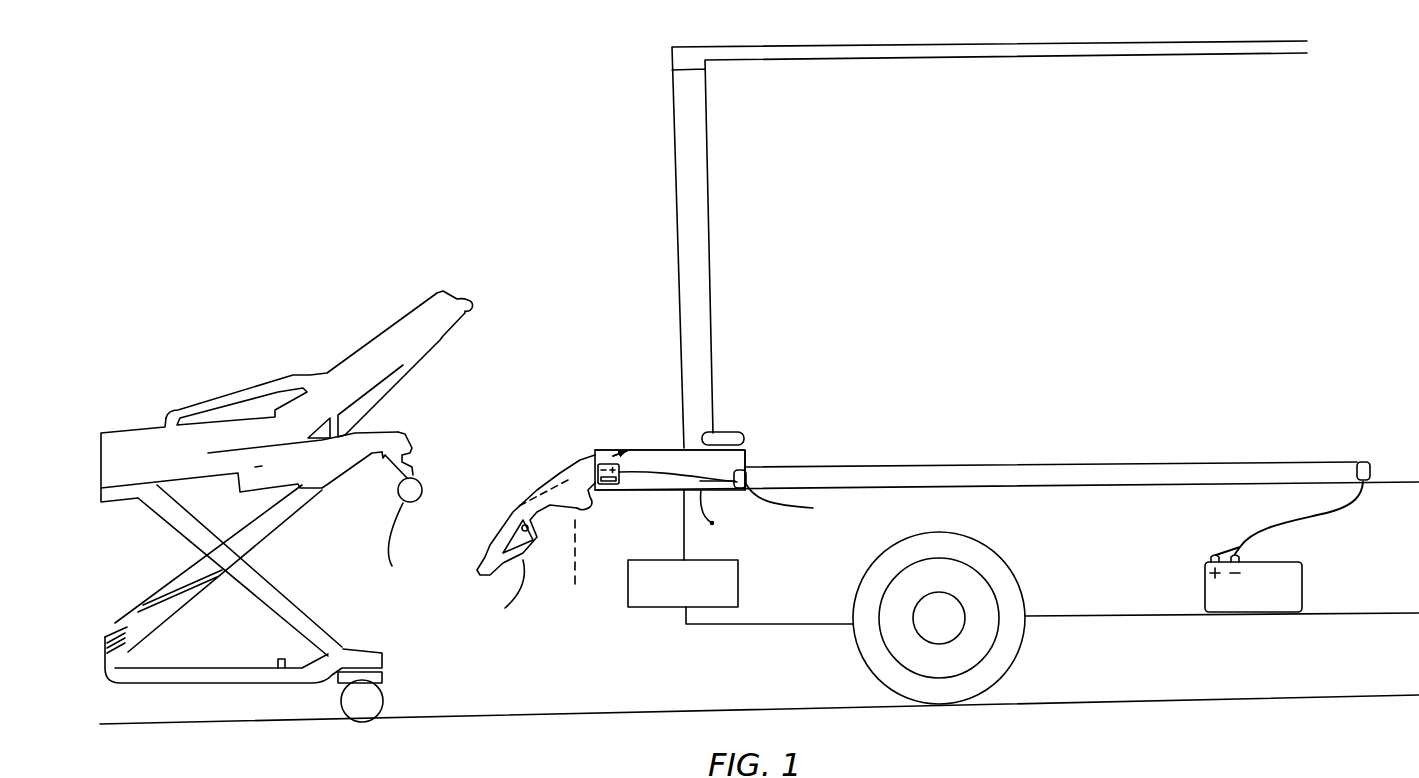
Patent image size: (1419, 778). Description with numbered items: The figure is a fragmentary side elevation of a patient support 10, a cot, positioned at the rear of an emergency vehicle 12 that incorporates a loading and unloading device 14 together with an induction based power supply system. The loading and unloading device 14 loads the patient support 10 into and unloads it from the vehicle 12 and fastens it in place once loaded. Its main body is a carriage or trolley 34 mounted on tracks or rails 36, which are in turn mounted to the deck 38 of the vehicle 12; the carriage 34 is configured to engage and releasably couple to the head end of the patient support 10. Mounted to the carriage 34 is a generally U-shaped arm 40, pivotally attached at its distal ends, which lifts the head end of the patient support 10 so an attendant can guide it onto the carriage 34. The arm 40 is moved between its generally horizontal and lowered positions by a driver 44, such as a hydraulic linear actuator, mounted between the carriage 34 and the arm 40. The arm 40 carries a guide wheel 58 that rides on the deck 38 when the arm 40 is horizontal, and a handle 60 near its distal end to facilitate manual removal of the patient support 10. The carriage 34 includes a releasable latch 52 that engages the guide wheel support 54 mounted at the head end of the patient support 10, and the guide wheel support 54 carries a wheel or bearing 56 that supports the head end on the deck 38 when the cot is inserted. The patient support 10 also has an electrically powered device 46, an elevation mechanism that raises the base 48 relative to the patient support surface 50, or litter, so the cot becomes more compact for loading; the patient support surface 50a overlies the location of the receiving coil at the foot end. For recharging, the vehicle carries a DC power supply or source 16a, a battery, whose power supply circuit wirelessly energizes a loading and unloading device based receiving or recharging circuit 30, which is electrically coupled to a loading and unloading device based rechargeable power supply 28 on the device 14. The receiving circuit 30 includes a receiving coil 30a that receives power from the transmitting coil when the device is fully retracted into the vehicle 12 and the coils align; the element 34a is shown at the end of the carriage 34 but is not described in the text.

The patient support 10 is at (432, 250).
The emergency vehicle 12 is at (658, 93).
The loading and unloading device 14 is at (649, 440).
The DC power supply or source 16a is at (1190, 580).
The loading and unloading device based rechargeable power supply 28 is at (608, 461).
The loading and unloading device based receiving or recharging circuit 30 is at (729, 520).
The receiving coil 30a is at (808, 504).
The carriage or trolley 34 is at (672, 467).
The receiver end tab 34a is at (747, 463).
The tracks or rails 36 is at (1117, 462).
The deck 38 is at (985, 483).
The arm 40 is at (579, 450).
The driver 44 is at (577, 567).
The electrically powered device 46 is at (238, 592).
The base 48 is at (232, 693).
The patient support surface 50 is at (260, 362).
The patient support surface 50a is at (125, 440).
The releasable latch 52 is at (733, 434).
The guide wheel support 54 is at (425, 459).
The wheel or bearing 56 is at (411, 552).
The guide wheel 58 is at (595, 508).
The handle 60 is at (499, 611).